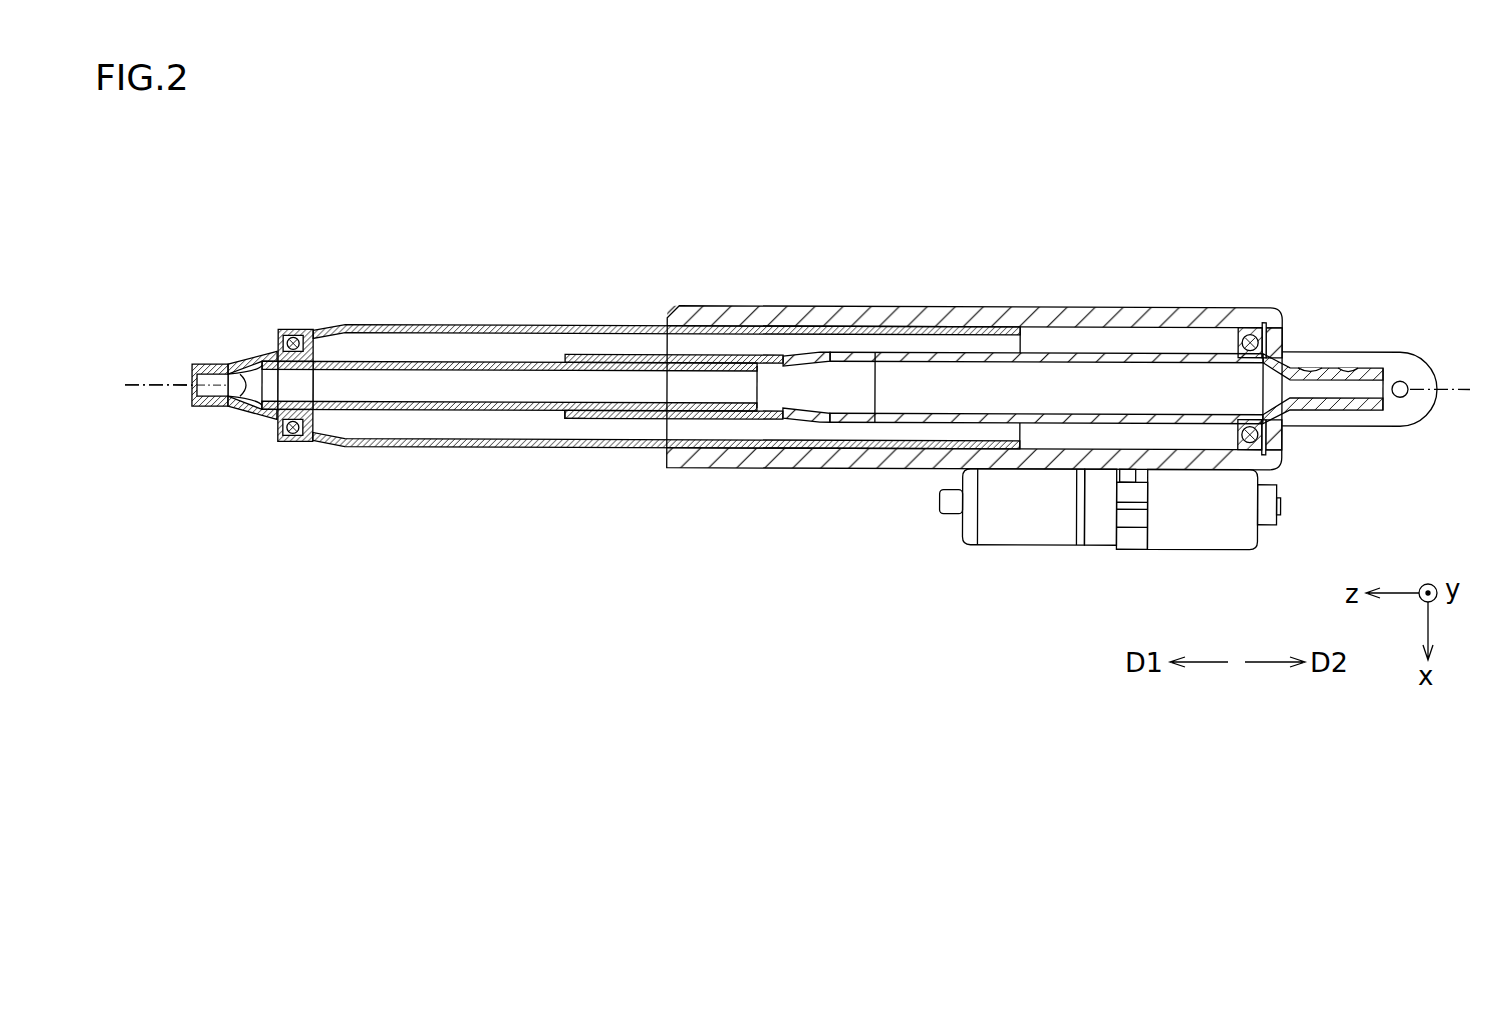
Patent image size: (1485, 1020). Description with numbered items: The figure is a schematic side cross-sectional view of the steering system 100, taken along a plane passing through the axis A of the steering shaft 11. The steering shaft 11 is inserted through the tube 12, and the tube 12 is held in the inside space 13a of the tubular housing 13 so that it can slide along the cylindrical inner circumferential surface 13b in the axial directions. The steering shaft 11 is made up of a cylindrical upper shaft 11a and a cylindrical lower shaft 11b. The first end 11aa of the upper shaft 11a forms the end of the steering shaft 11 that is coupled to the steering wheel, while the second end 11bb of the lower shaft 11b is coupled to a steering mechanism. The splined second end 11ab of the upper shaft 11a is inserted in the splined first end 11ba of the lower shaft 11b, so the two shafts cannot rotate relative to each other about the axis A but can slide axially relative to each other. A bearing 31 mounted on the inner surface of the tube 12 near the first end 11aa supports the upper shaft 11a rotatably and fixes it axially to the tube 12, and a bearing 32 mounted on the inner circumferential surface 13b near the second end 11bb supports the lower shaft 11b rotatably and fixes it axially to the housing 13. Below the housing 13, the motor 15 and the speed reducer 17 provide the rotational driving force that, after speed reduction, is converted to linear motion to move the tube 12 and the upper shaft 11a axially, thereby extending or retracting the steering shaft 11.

The steering system 100 is at (1292, 203).
The steering shaft 11 is at (190, 360).
The upper shaft 11a is at (421, 362).
The first end 11aa is at (229, 364).
The second end 11ab is at (768, 422).
The lower shaft 11b is at (592, 354).
The first end 11ba is at (560, 419).
The second end 11bb is at (1373, 362).
The tube 12 is at (333, 326).
The housing 13 is at (700, 306).
The inside space 13a is at (1170, 338).
The inner circumferential surface 13b is at (1210, 338).
The motor 15 is at (1037, 545).
The speed reducer 17 is at (1187, 549).
The bearing 31 is at (290, 443).
The bearing 32 is at (1265, 453).
The axis A is at (153, 390).